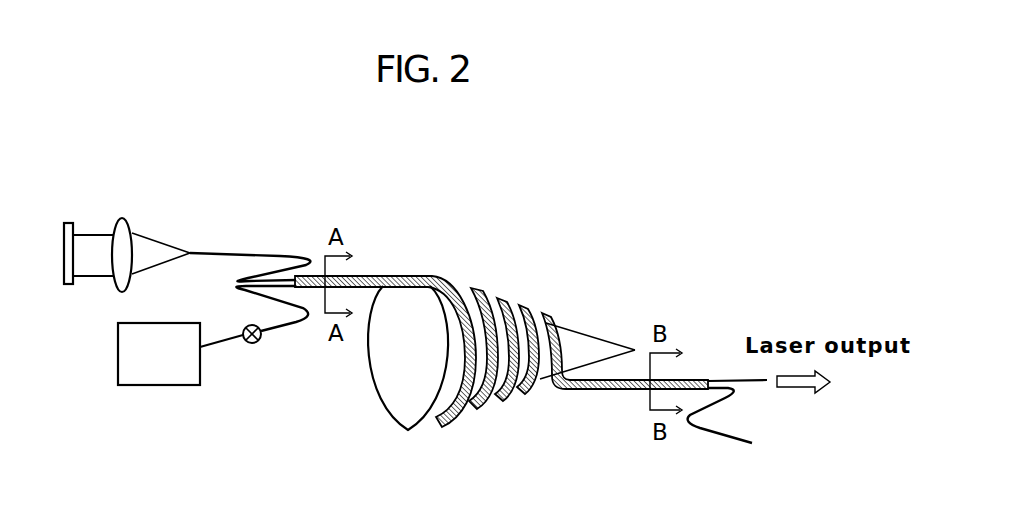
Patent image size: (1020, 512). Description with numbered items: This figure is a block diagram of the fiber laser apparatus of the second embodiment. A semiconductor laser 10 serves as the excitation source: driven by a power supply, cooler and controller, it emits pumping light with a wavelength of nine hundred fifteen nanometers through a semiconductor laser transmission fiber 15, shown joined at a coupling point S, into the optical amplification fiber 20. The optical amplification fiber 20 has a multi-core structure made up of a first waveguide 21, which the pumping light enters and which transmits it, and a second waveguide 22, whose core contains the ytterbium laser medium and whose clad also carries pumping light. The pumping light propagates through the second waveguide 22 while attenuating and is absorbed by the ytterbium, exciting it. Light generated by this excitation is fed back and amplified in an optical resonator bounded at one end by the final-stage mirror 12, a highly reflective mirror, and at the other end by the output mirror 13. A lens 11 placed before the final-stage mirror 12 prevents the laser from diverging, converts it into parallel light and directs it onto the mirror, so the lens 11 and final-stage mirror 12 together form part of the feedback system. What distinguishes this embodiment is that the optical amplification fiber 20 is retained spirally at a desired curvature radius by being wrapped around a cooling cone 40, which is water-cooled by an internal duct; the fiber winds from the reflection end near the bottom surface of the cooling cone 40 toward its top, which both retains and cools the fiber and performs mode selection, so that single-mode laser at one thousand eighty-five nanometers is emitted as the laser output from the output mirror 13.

The semiconductor laser 10 is at (118, 355).
The lens 11 is at (123, 222).
The final-stage mirror 12 is at (72, 221).
The output mirror 13 is at (766, 382).
The semiconductor laser transmission fiber 15 is at (238, 345).
The optical amplification fiber 20 is at (378, 275).
The first waveguide 21 is at (296, 334).
The second waveguide 22 is at (247, 253).
The cooling cone 40 is at (385, 414).
The signal light S is at (258, 344).